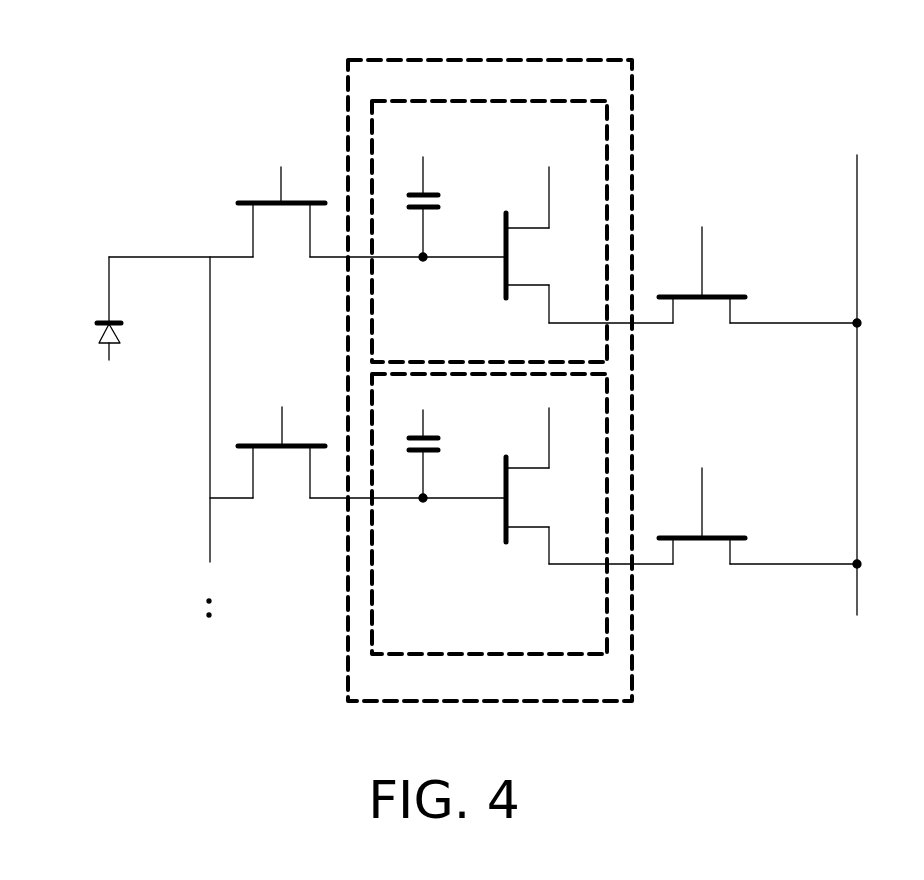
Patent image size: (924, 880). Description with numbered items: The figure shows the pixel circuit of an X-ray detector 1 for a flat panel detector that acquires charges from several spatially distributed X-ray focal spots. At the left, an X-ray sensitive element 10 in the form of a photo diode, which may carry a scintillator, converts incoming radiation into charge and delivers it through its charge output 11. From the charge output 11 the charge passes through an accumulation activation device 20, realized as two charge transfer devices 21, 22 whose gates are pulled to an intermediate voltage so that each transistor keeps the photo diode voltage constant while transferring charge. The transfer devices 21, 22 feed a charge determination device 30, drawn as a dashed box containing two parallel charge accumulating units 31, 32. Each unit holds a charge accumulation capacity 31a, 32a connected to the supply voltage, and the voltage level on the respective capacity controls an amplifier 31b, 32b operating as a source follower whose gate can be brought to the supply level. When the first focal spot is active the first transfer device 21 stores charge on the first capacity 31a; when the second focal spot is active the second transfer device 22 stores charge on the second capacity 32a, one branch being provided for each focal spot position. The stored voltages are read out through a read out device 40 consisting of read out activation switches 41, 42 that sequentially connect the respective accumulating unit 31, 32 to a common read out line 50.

The X-ray detector 1 is at (810, 86).
The X-ray sensitive element 10 is at (97, 338).
The charge output 11 is at (149, 257).
The accumulation activation device 20 is at (217, 706).
The charge transfer device 21 is at (264, 201).
The charge transfer device 22 is at (265, 443).
The charge determination device 30 is at (633, 657).
The charge accumulating unit 31 is at (607, 126).
The charge accumulation capacity 31a is at (430, 212).
The amplifier/source follower 31b is at (538, 222).
The charge accumulating unit 32 is at (607, 613).
The charge accumulation capacity 32a is at (430, 455).
The amplifier/source follower 32b is at (538, 462).
The read out device 40 is at (765, 706).
The read out activation switch 41 is at (690, 288).
The read out activation switch 42 is at (690, 533).
The read out line 50 is at (857, 590).